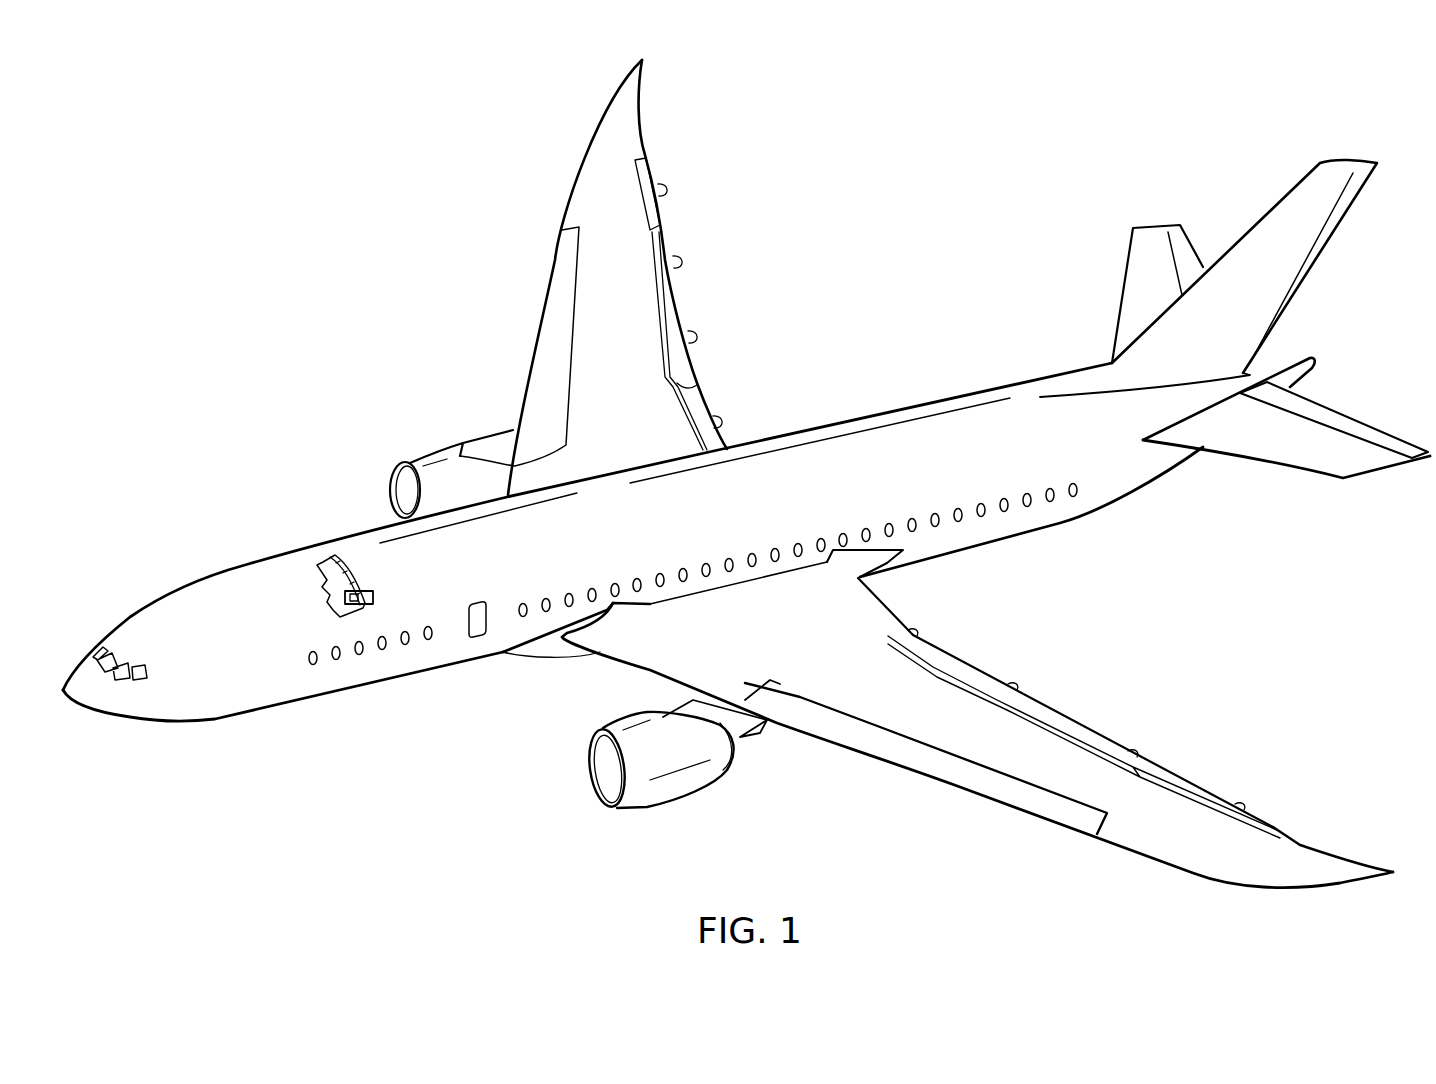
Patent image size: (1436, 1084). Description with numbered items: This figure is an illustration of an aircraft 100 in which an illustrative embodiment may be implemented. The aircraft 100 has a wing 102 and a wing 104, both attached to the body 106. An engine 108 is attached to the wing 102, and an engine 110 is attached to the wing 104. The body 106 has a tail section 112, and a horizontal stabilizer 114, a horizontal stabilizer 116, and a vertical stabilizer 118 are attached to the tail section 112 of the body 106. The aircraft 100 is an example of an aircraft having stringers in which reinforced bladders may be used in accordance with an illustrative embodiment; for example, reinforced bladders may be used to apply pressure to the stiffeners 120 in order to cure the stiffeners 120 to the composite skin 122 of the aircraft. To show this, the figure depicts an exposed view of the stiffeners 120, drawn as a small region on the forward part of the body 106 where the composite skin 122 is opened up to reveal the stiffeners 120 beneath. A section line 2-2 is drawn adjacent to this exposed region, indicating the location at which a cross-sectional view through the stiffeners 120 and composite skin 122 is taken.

The aircraft 100 is at (746, 502).
The wing 102 is at (641, 100).
The wing 104 is at (1233, 887).
The body 106 is at (247, 560).
The engine 108 is at (433, 443).
The engine 110 is at (675, 800).
The tail section 112 is at (1242, 372).
The horizontal stabilizer 114 is at (1123, 293).
The horizontal stabilizer 116 is at (1295, 467).
The vertical stabilizer 118 is at (1318, 258).
The stiffeners 120 is at (326, 553).
The composite skin 122 is at (629, 552).
The section line 2-2 is at (387, 590).